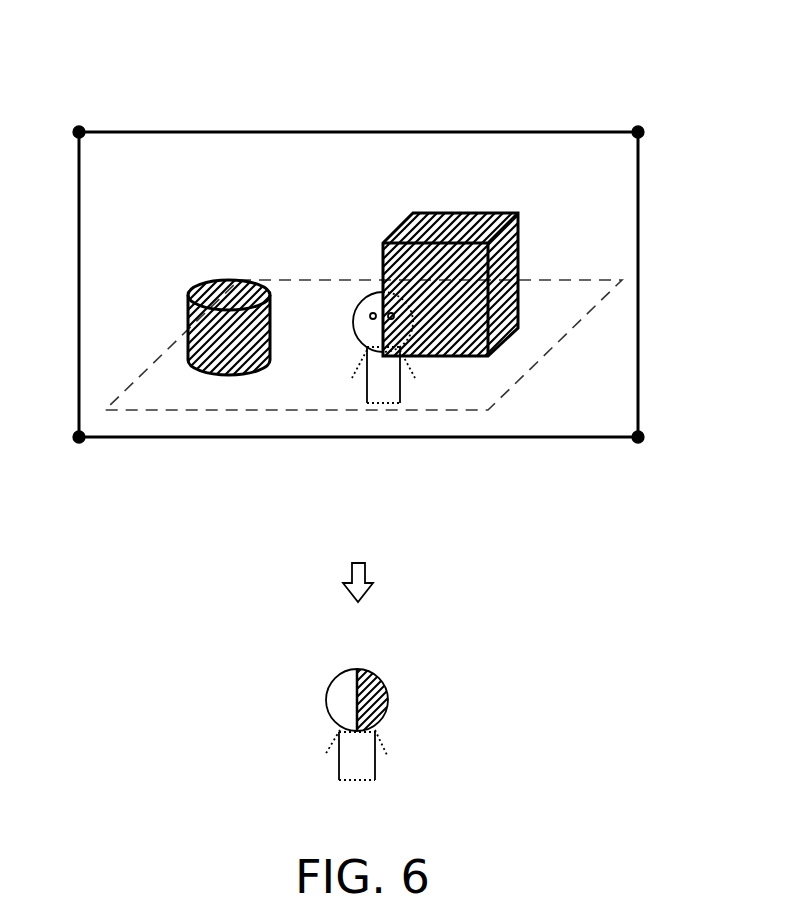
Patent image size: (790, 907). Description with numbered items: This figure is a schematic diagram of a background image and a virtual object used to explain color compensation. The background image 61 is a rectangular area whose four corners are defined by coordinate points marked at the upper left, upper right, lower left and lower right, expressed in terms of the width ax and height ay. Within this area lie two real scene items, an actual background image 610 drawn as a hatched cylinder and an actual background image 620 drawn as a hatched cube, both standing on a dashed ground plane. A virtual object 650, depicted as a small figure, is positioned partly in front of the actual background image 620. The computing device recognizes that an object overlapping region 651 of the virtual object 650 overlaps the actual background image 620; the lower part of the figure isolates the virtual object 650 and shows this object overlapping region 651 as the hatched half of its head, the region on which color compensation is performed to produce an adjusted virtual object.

The background image 61 is at (336, 150).
The actual background image 610 is at (222, 280).
The actual background image 620 is at (465, 213).
The virtual object 650 is at (402, 395).
The object overlapping region 651 is at (388, 686).